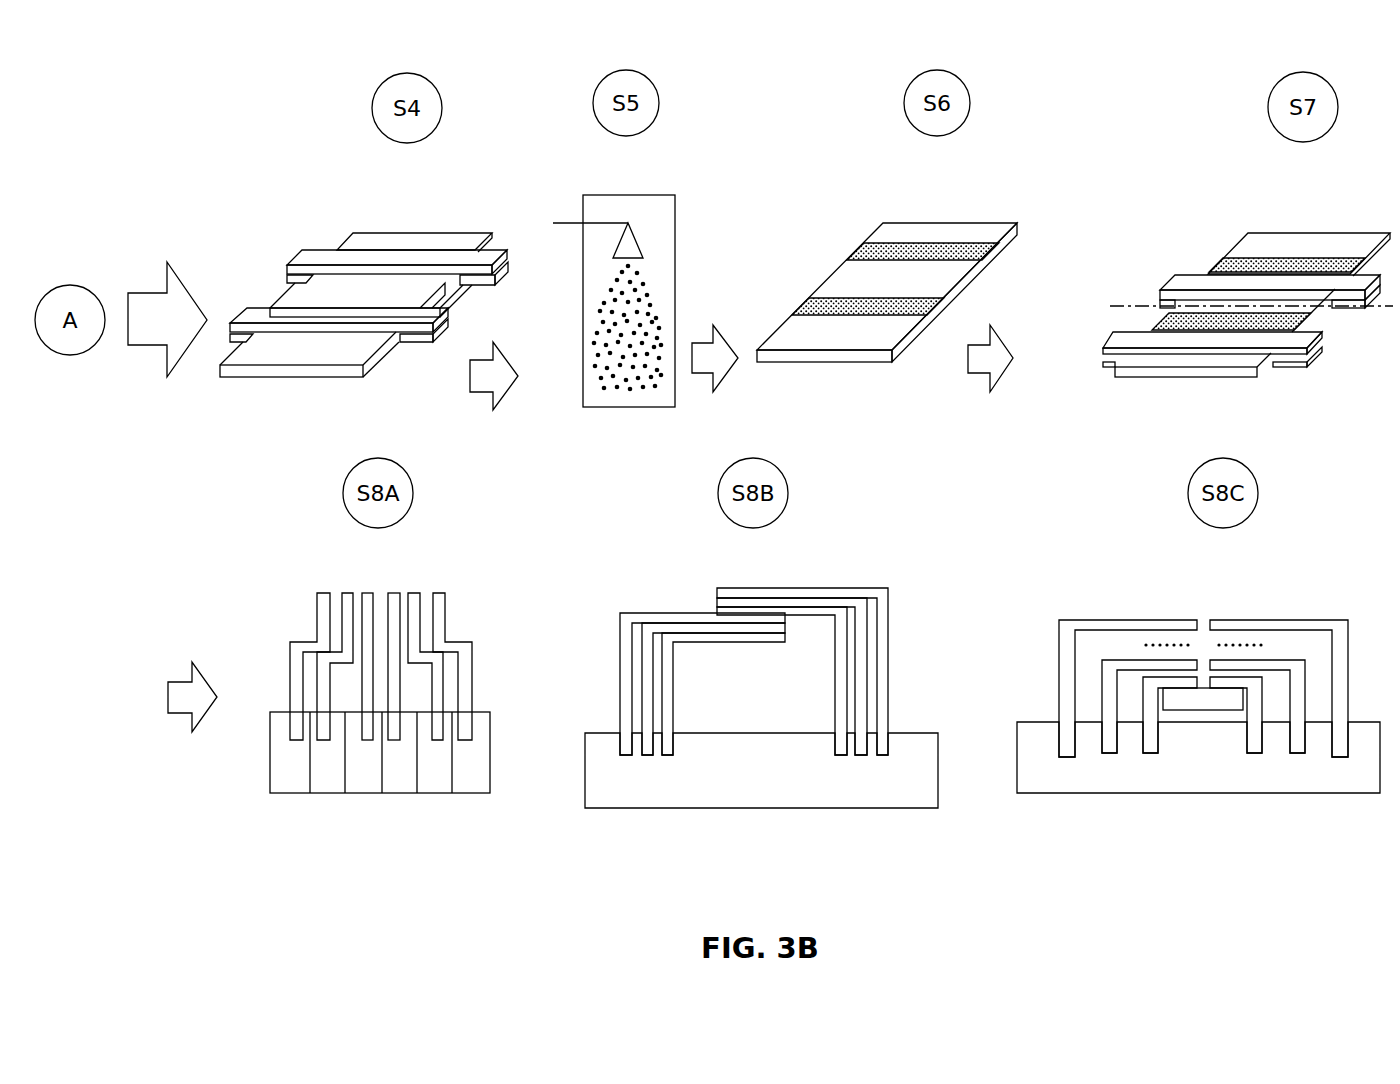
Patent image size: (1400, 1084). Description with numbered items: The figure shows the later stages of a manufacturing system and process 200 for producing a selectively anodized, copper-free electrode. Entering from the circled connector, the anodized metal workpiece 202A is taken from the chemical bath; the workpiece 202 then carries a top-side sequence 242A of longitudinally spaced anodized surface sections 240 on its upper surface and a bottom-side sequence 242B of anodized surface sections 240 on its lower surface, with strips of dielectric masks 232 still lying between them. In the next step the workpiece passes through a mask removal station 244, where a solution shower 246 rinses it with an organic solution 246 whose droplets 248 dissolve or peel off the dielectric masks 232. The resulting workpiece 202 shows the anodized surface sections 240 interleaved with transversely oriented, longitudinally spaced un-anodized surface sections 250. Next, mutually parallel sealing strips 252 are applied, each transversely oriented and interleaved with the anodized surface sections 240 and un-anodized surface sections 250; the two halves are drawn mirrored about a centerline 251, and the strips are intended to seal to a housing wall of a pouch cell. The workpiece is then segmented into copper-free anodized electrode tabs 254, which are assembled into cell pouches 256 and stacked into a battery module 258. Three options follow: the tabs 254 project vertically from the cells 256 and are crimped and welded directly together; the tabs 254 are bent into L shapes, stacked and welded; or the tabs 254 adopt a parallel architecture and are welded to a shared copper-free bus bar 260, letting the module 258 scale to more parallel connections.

The manufacturing system and attendant manufacturing process 200 is at (1072, 78).
The workpiece 202 is at (393, 235).
The anodized metal workpiece 202A is at (445, 206).
The dielectric masks 232 is at (297, 253).
The anodized surface sections 240 is at (370, 238).
The top-side sequence of anodized surface sections 242A is at (296, 180).
The bottom-side sequence of anodized surface sections 242B is at (302, 394).
The mask removal station 244 is at (651, 175).
The solution shower 246 is at (600, 223).
The deposited particles 248 is at (597, 383).
The un-anodized surface sections 250 is at (865, 245).
The mirror axis 251 is at (1117, 302).
The sealing strips 252 is at (1287, 368).
The anodized electrode tabs 254 is at (303, 642).
The cell pouches 256 is at (323, 794).
The battery module 258 is at (269, 695).
The bus bar 260 is at (1203, 711).